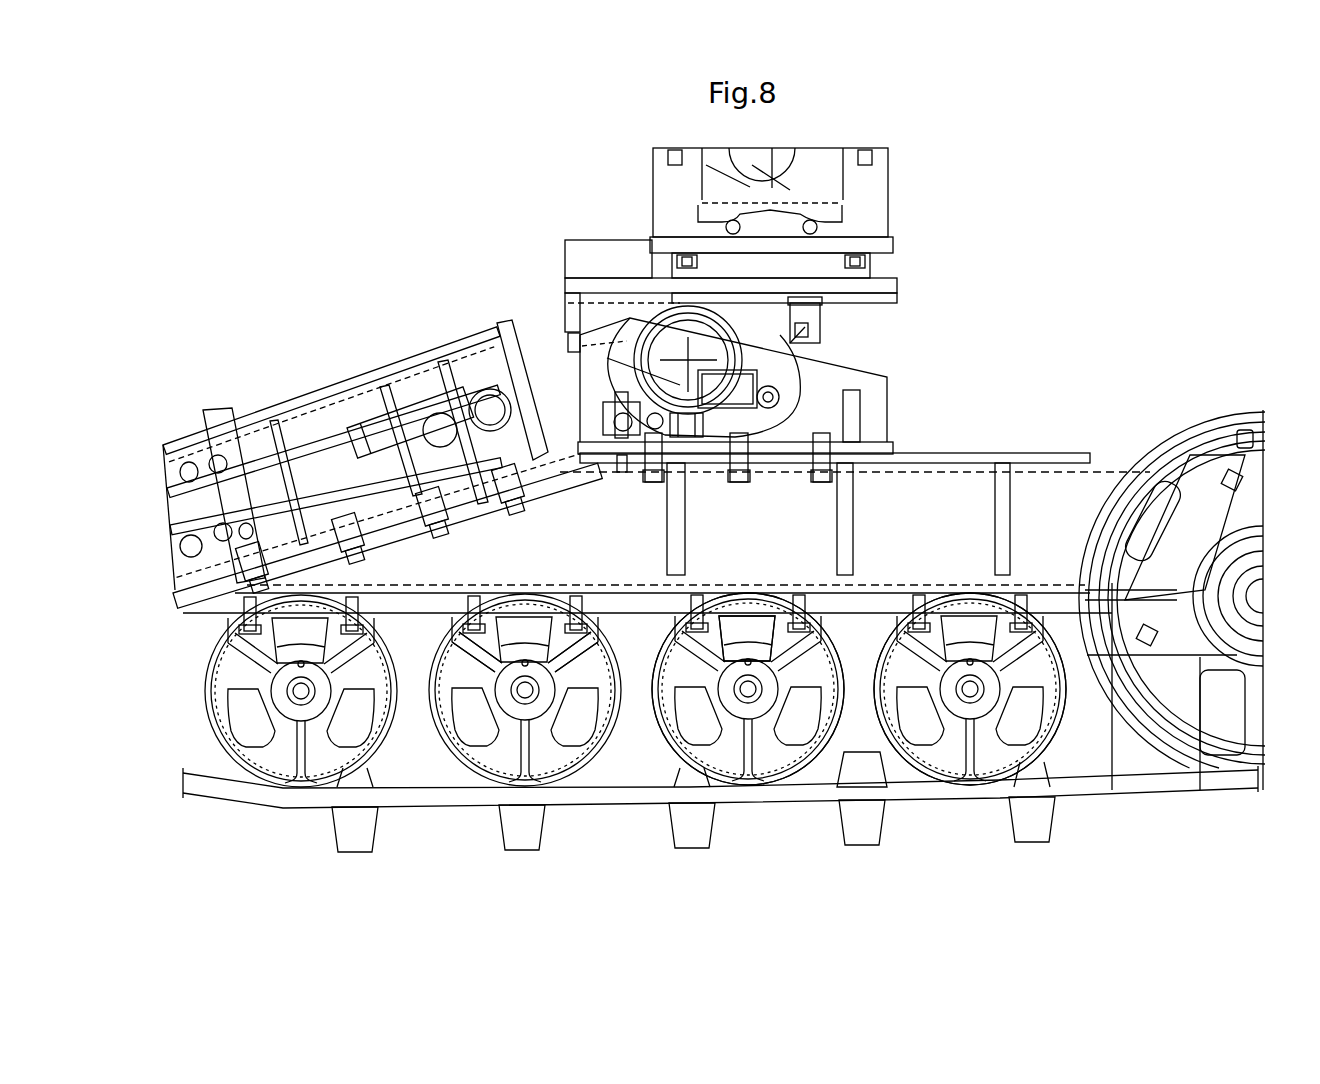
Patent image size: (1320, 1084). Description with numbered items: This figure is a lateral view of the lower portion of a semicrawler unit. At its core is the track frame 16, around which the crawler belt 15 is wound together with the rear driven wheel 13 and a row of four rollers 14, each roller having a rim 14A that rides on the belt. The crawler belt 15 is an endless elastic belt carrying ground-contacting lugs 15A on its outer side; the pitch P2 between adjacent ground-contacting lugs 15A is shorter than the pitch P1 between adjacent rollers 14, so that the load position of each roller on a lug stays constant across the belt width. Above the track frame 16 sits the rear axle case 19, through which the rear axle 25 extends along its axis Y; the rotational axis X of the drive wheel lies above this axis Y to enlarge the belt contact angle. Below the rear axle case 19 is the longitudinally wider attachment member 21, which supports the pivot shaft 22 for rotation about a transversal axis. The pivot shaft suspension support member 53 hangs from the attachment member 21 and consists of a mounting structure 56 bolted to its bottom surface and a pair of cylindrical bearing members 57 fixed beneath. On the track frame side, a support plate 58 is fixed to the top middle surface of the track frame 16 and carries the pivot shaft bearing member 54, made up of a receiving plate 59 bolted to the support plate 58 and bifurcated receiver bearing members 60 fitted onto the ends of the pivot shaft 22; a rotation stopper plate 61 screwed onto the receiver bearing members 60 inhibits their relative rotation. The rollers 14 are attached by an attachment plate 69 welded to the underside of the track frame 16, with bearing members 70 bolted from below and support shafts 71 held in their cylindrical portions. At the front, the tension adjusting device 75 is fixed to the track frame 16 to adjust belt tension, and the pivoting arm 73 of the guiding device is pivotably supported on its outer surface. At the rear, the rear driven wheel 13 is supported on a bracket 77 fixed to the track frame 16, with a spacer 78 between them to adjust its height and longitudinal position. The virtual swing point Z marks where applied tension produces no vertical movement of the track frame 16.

The rear driven wheel 13 is at (1209, 427).
The roller 14 is at (859, 708).
The roller rim 14A is at (883, 790).
The crawler belt 15 is at (250, 790).
The ground-contacting lug 15A is at (505, 820).
The track frame 16 is at (1073, 465).
The rear axle case 19 is at (857, 225).
The attachment member 21 is at (677, 245).
The pivot shaft 22 is at (663, 347).
The rear axle 25 is at (778, 156).
The pivot shaft suspension support member 53 is at (830, 317).
The pivot shaft bearing member 54 is at (889, 384).
The mounting structure 56 is at (560, 296).
The cylindrical bearing member 57 is at (607, 358).
The support plate 58 is at (974, 460).
The receiving plate 59 is at (855, 448).
The bifurcated receiver bearing member 60 is at (875, 413).
The rotation stopper plate 61 is at (772, 412).
The attachment plate 69 is at (425, 608).
The bearing member 70 is at (527, 654).
The support shaft 71 is at (576, 622).
The pivoting arm 73 is at (759, 615).
The tension adjusting device 75 is at (322, 383).
The bracket 77 is at (1200, 790).
The spacer 78 is at (1112, 790).
The rotational axis of the drive wheel X is at (708, 359).
The axis of the rear axle Y is at (713, 160).
The virtual swing point Z is at (690, 358).
The pitch of adjacent rollers P1 is at (746, 898).
The pitch of adjacent ground-contacting lugs P2 is at (748, 912).